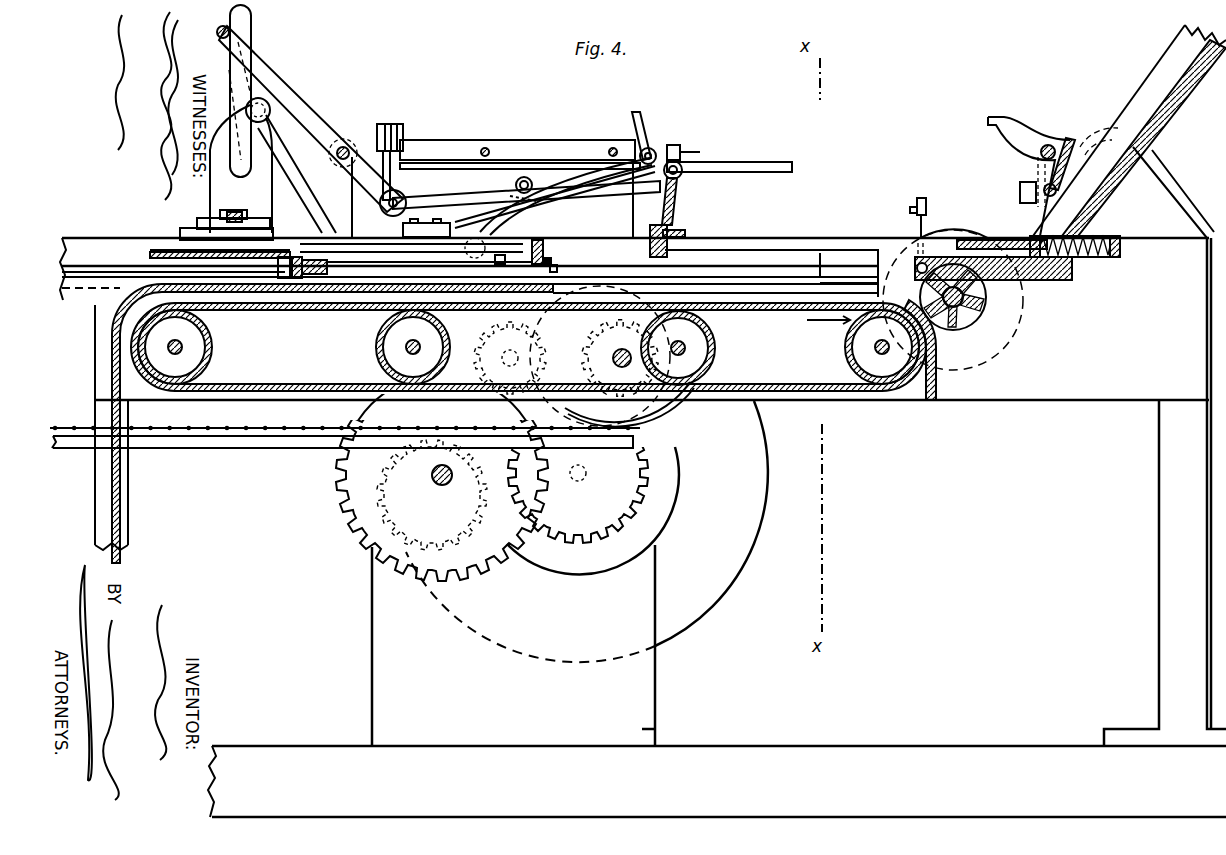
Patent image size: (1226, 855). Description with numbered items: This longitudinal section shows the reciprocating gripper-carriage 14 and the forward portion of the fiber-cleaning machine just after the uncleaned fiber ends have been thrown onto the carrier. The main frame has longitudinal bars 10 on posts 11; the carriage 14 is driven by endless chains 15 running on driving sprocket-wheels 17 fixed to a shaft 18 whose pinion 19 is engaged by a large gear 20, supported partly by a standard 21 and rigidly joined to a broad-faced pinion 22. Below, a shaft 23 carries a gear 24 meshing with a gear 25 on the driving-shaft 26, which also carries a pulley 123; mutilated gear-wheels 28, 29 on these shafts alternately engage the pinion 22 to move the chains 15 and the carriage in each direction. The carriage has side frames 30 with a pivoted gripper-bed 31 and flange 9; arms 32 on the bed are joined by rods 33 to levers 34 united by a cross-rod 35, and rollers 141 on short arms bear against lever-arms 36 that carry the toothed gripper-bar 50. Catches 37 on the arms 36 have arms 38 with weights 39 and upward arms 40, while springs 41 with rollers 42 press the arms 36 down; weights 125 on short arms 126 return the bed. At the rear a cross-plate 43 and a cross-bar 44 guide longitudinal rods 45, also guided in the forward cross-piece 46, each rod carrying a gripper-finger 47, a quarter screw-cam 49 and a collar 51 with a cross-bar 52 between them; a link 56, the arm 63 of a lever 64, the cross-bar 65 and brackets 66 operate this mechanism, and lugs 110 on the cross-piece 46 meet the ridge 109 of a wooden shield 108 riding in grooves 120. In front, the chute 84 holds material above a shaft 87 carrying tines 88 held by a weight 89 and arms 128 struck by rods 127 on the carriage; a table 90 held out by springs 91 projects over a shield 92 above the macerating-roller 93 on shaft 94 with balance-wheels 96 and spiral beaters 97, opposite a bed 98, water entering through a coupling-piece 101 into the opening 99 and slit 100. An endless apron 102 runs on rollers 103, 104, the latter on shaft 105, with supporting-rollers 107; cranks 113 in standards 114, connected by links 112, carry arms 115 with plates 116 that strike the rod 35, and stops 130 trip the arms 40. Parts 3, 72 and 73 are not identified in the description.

The stop 3 is at (509, 260).
The upwardly-extending flange 9 is at (686, 233).
The longitudinal bars 10 is at (635, 227).
The posts 11 is at (128, 492).
The reciprocating gripper-carriage 14 is at (517, 138).
The endless chains 15 is at (345, 426).
The sprocket-wheels 17 is at (678, 412).
The transverse shaft 18 is at (621, 348).
The pinion 19 is at (604, 322).
The large gear 20 is at (605, 358).
The auxiliary frame or standard 21 is at (513, 645).
The broad-faced pinion 22 is at (500, 358).
The transverse shaft 23 is at (443, 486).
The gear 24 is at (442, 475).
The gear 25 is at (580, 535).
The driving-shaft 26 is at (583, 480).
The mutilated gear-wheel 28 is at (593, 510).
The mutilated gear-wheel 29 is at (447, 570).
The side frames 30 is at (552, 140).
The gripper-bed 31 is at (650, 245).
The arms 32 is at (677, 192).
The rods 33 is at (578, 185).
The levers 34 is at (312, 121).
The cross-rod 35 is at (217, 33).
The lever-arms 36 is at (566, 196).
The catches 37 is at (668, 140).
The outwardly-extending arms 38 is at (701, 144).
The weights 39 is at (680, 148).
The upwardly-extending arms 40 is at (641, 116).
The springs 41 is at (480, 204).
The rollers 42 is at (516, 182).
The cross-plate 43 is at (140, 245).
The cross-bar 44 is at (300, 292).
The longitudinal rods 45 is at (430, 264).
The forward cross-piece 46 is at (534, 237).
The gripper-finger 47 is at (557, 269).
The quarter screw-cams 49 is at (329, 268).
The toothed gripper-bar 50 is at (555, 197).
The collars 51 is at (285, 256).
The cross-bar 52 is at (298, 256).
The link 56 is at (252, 258).
The rearwardly-extending arm 63 is at (190, 226).
The lever 64 is at (233, 228).
The cross-bar 65 is at (243, 211).
The brackets 66 is at (283, 175).
The roller 72 is at (485, 246).
The cam 73 is at (565, 233).
The chute 84 is at (1129, 130).
The transverse shaft 87 is at (1062, 160).
The tines or fingers 88 is at (1045, 195).
The weight 89 is at (1020, 192).
The table 90 is at (990, 240).
The springs 91 is at (1085, 235).
The guard or shield 92 is at (1003, 280).
The macerating-roller 93 is at (953, 297).
The shaft 94 is at (931, 294).
The balance-wheels 96 is at (945, 235).
The ridges or beaters 97 is at (1012, 310).
The bed 98 is at (915, 305).
The transverse opening 99 is at (917, 267).
The slit 100 is at (956, 282).
The coupling-piece 101 is at (899, 227).
The endless carrier belt or apron 102 is at (528, 347).
The roller 103 is at (212, 346).
The roller 104 is at (866, 347).
The shaft 105 is at (882, 354).
The supporting-rollers 107 is at (725, 347).
The second apron or shield 108 is at (307, 423).
The upwardly-extending ridge 109 is at (715, 287).
The downwardly-extending lugs 110 is at (552, 262).
The link 112 is at (297, 174).
The short crank-arm 113 is at (272, 138).
The standards 114 is at (231, 169).
The arm 115 is at (232, 101).
The plate 116 is at (251, 24).
The grooves 120 is at (760, 290).
The pulley 123 is at (757, 455).
The weights 125 is at (395, 126).
The short arms 126 is at (392, 160).
The forwardly-extending rods 127 is at (750, 162).
The upwardly-extending arms 128 is at (1037, 162).
The outwardly-extending stops 130 is at (1029, 164).
The rollers 141 is at (683, 177).